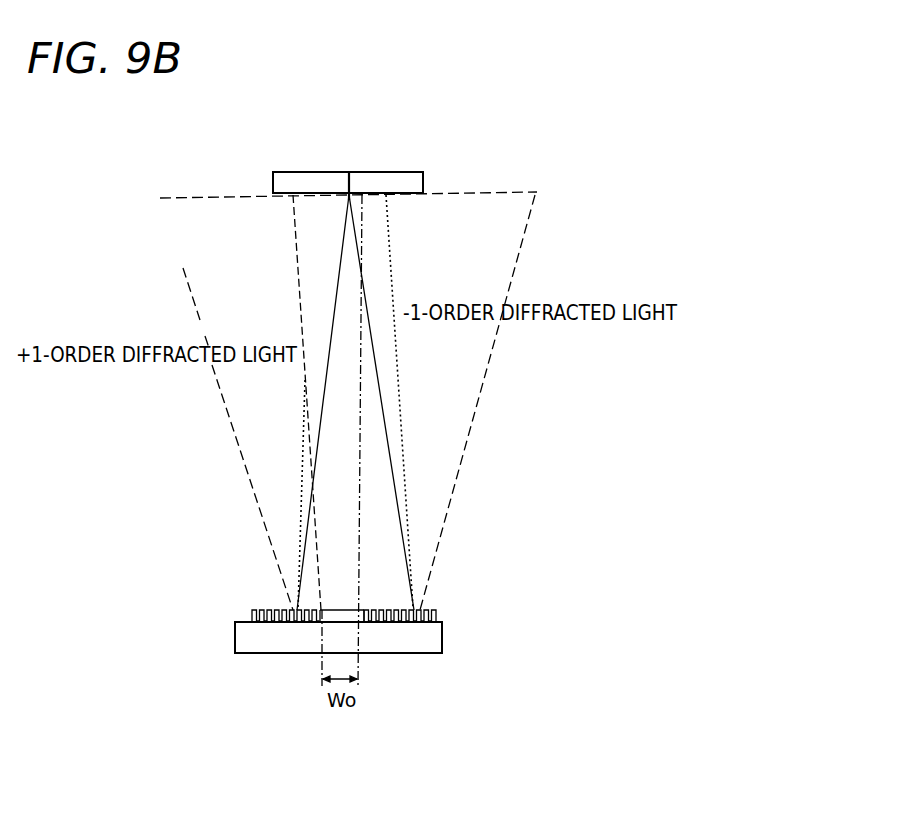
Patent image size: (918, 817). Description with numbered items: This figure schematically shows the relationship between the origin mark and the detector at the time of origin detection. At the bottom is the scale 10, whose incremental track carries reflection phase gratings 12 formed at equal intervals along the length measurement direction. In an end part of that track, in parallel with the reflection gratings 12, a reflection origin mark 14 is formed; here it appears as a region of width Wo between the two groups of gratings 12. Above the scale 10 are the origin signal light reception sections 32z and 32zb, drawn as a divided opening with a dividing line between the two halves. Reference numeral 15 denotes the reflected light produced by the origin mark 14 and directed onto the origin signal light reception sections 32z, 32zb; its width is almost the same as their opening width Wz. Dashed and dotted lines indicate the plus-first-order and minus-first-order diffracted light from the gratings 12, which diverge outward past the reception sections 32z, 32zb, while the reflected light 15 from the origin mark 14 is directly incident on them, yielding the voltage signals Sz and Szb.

The origin signal light reception section 32z is at (297, 181).
The origin signal light reception section 32zb is at (393, 175).
The reflected light 15 is at (352, 201).
The reflection origin mark 14 is at (343, 609).
The reflection phase gratings 12 is at (436, 611).
The scale 10 is at (443, 645).